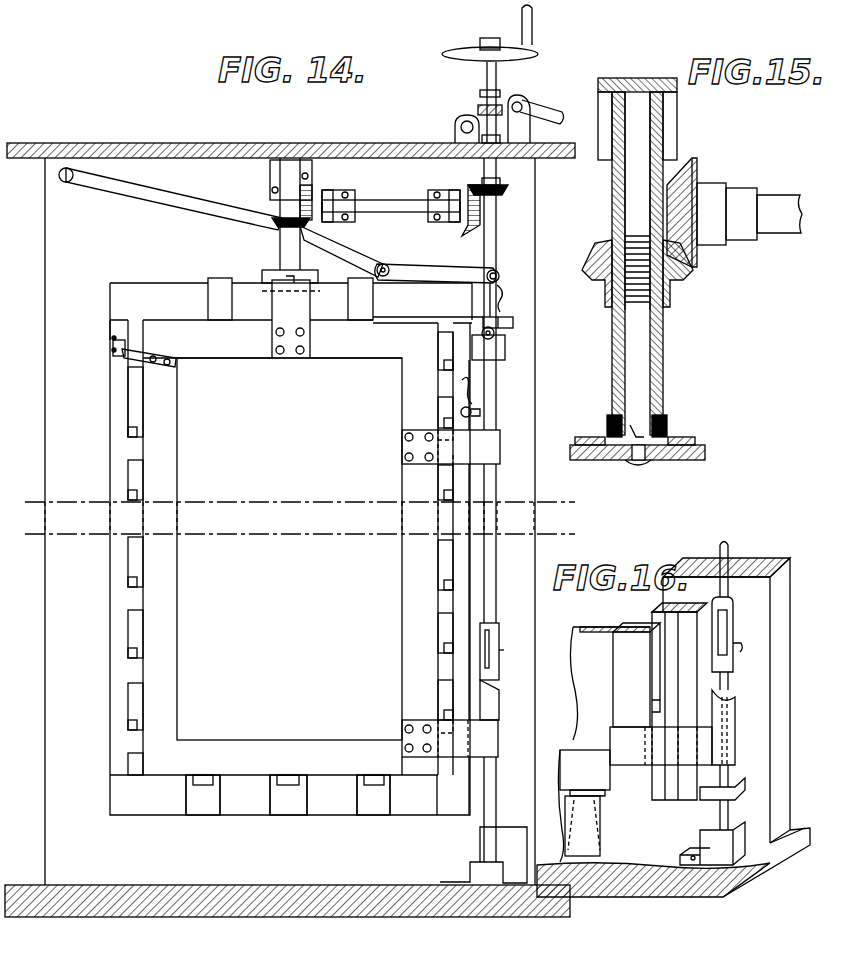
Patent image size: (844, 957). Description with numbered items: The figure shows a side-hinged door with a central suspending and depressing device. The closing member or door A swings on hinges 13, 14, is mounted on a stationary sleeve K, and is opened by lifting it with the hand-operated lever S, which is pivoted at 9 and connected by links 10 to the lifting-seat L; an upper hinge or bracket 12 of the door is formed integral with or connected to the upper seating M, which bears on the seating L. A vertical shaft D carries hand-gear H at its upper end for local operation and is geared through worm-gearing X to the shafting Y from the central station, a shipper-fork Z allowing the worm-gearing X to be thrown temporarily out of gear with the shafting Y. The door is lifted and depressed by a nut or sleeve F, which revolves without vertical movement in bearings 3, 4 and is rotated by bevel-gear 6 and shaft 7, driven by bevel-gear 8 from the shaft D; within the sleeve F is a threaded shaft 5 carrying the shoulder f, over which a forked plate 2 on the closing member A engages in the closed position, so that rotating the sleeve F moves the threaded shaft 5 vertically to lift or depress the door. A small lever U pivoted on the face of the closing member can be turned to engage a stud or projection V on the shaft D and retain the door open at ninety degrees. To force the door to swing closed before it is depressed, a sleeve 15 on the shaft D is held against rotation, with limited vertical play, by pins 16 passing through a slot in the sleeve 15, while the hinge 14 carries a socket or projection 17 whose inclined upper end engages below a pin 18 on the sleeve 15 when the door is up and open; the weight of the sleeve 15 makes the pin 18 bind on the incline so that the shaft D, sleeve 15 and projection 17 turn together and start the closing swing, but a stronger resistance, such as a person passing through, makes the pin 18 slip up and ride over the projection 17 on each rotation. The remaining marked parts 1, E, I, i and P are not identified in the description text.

In FIG. 14, the support block 1 is at (208, 302).
In FIG. 14, the forked plate 2 is at (272, 303).
In FIG. 15, the forked plate 2 is at (580, 437).
In FIG. 15, the bearing 3 is at (660, 98).
In FIG. 15, the bearing 4 is at (605, 425).
In FIG. 15, the threaded shaft 5 is at (637, 263).
In FIG. 14, the bevel-gear 6 is at (312, 198).
In FIG. 15, the bevel-gear 6 is at (690, 258).
In FIG. 14, the shaft 7 is at (388, 206).
In FIG. 15, the shaft 7 is at (782, 228).
In FIG. 14, the bevel-gear 8 is at (462, 236).
In FIG. 14, the pivot 9 is at (390, 264).
In FIG. 14, the links 10 is at (513, 320).
In FIG. 14, the upper hinge or bracket 12 is at (412, 322).
In FIG. 14, the hinge 13 is at (486, 452).
In FIG. 15, the hinge 13 is at (636, 420).
In FIG. 14, the hinge 14 is at (487, 740).
In FIG. 16, the hinge 14 is at (660, 800).
In FIG. 16, the sleeve 15 is at (733, 606).
In FIG. 16, the pins 16 is at (727, 633).
In FIG. 16, the socket or projection 17 is at (735, 725).
In FIG. 16, the pin 18 is at (735, 655).
In FIG. 14, the hand-gear H is at (455, 62).
In FIG. 14, the vertical shaft D is at (497, 77).
In FIG. 16, the vertical shaft D is at (729, 548).
In FIG. 14, the worm-gearing X is at (478, 110).
In FIG. 14, the shafting Y is at (455, 128).
In FIG. 14, the shipper-fork Z is at (558, 110).
In FIG. 14, the hand-operated lever S is at (172, 206).
In FIG. 14, the nut or sleeve F is at (280, 256).
In FIG. 15, the nut or sleeve F is at (664, 356).
In FIG. 14, the shoulder f is at (310, 283).
In FIG. 15, the shoulder f is at (700, 445).
In FIG. 14, the stationary sleeve K is at (503, 312).
In FIG. 14, the upper seating M is at (495, 333).
In FIG. 14, the lifting-seat L is at (505, 342).
In FIG. 14, the pawl P is at (120, 358).
In FIG. 14, the stud or projection V is at (472, 388).
In FIG. 14, the lever U is at (471, 410).
In FIG. 14, the closing member A is at (289, 549).
In FIG. 16, the closing member A is at (604, 744).
In FIG. 14, the casing E is at (268, 577).
In FIG. 14, the rack tooth block I is at (140, 590).
In FIG. 16, the rack tooth block I is at (650, 678).
In FIG. 14, the small tooth insert i is at (132, 600).
In FIG. 16, the small tooth insert i is at (652, 708).